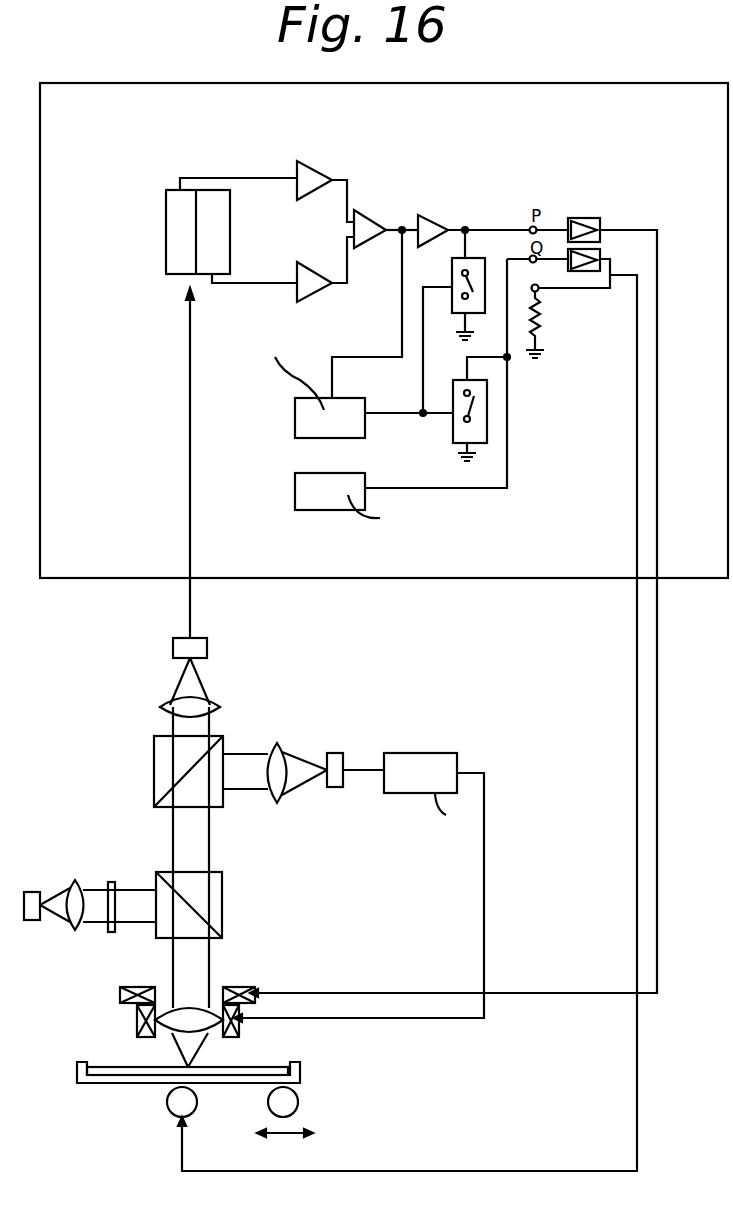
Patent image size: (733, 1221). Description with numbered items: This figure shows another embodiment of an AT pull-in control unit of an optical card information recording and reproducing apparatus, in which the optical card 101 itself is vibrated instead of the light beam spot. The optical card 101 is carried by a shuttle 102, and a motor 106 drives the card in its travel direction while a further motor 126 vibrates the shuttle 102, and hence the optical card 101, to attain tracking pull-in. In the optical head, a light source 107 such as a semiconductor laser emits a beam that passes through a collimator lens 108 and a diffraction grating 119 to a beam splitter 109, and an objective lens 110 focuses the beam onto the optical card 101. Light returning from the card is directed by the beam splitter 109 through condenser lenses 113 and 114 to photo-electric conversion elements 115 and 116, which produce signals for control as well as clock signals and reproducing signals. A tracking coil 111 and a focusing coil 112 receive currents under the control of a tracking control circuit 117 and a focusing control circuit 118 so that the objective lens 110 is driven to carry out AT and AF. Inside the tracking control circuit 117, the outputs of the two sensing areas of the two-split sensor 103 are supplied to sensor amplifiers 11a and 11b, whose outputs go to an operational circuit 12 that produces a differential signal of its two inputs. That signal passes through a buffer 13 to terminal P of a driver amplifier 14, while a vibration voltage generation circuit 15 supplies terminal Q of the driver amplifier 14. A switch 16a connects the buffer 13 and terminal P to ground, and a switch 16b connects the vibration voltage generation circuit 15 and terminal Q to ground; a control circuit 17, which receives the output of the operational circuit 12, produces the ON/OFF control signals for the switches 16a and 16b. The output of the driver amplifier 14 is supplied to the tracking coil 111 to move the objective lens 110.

The optical card 101 is at (113, 1065).
The shuttle 102 is at (118, 1085).
The two-split sensor 103 is at (167, 198).
The motor 106 is at (298, 1100).
The light source 107 is at (31, 920).
The collimator lens 108 is at (76, 930).
The beam splitter 109 is at (154, 760).
The objective lens 110 is at (188, 1013).
The tracking coil 111 is at (256, 990).
The focusing coil 112 is at (240, 1028).
The condenser lens 113 is at (165, 702).
The condenser lens 114 is at (278, 745).
The photo-electric conversion element 115 is at (207, 648).
The photo-electric conversion element 116 is at (338, 753).
The tracking control circuit 117 is at (349, 579).
The focusing control circuit 118 is at (428, 753).
The diffraction grating 119 is at (112, 882).
The motor 126 is at (197, 1113).
The sensor amplifier 11a is at (312, 167).
The sensor amplifier 11b is at (318, 300).
The operational circuit 12 is at (372, 210).
The buffer 13 is at (440, 217).
The driver amplifier 14 is at (585, 218).
The vibration voltage generation circuit 15 is at (295, 497).
The switch 16a is at (452, 282).
The switch 16b is at (451, 432).
The control circuit 17 is at (295, 412).